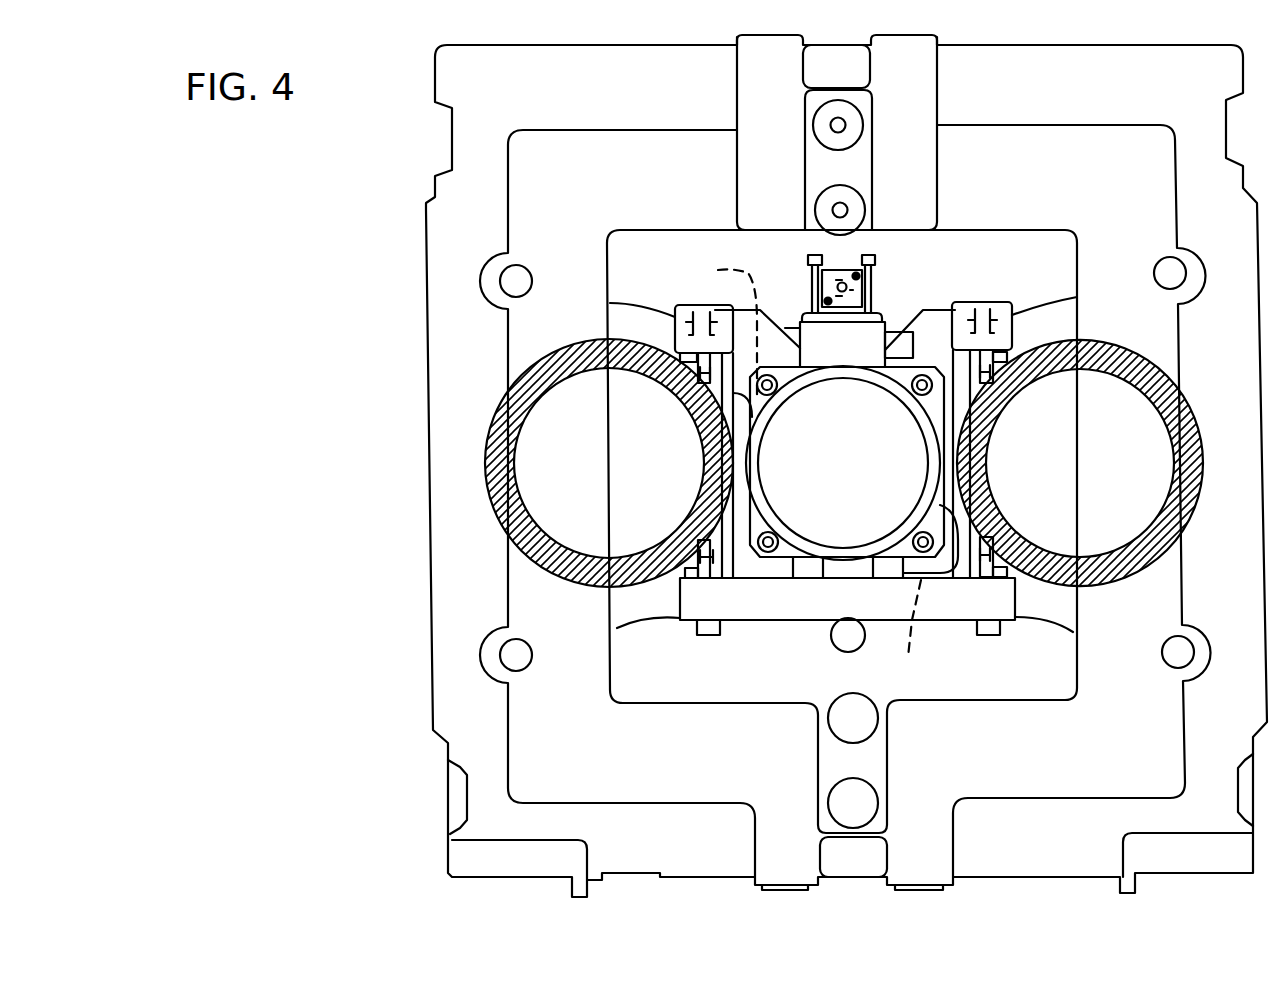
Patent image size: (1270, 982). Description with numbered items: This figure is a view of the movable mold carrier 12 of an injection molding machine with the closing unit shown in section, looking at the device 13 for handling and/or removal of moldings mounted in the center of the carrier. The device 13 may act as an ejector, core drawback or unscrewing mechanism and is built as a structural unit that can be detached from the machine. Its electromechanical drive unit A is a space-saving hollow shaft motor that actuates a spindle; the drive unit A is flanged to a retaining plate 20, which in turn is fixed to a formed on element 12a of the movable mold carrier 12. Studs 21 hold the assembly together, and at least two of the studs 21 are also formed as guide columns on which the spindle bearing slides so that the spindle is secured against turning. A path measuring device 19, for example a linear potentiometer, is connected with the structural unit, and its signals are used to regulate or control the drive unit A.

The movable mold carrier 12 is at (1102, 113).
The formed on element of the movable mold carrier 12a is at (712, 386).
The device for handling and/or removal of moldings 13 is at (849, 406).
The path measuring device 19 is at (810, 256).
The retaining plate 20 is at (925, 323).
The studs 21 is at (933, 668).
The drive unit A is at (829, 474).